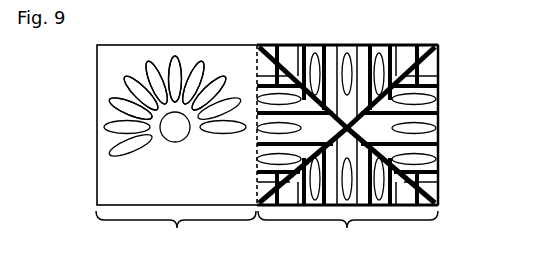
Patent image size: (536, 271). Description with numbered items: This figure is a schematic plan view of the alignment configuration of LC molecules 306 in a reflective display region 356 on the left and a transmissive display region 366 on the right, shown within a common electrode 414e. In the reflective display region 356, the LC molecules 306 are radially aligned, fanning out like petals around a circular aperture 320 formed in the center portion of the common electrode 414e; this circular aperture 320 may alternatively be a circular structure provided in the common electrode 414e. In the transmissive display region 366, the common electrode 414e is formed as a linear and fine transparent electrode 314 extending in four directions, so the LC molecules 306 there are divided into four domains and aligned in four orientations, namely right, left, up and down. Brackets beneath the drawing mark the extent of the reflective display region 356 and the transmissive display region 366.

The circular aperture 320 is at (167, 127).
The LC molecules 306 is at (117, 148).
The common electrode 414e is at (108, 187).
The linear and fine transparent electrode 314 is at (425, 191).
The reflective display region 356 is at (176, 237).
The transmissive display region 366 is at (348, 237).